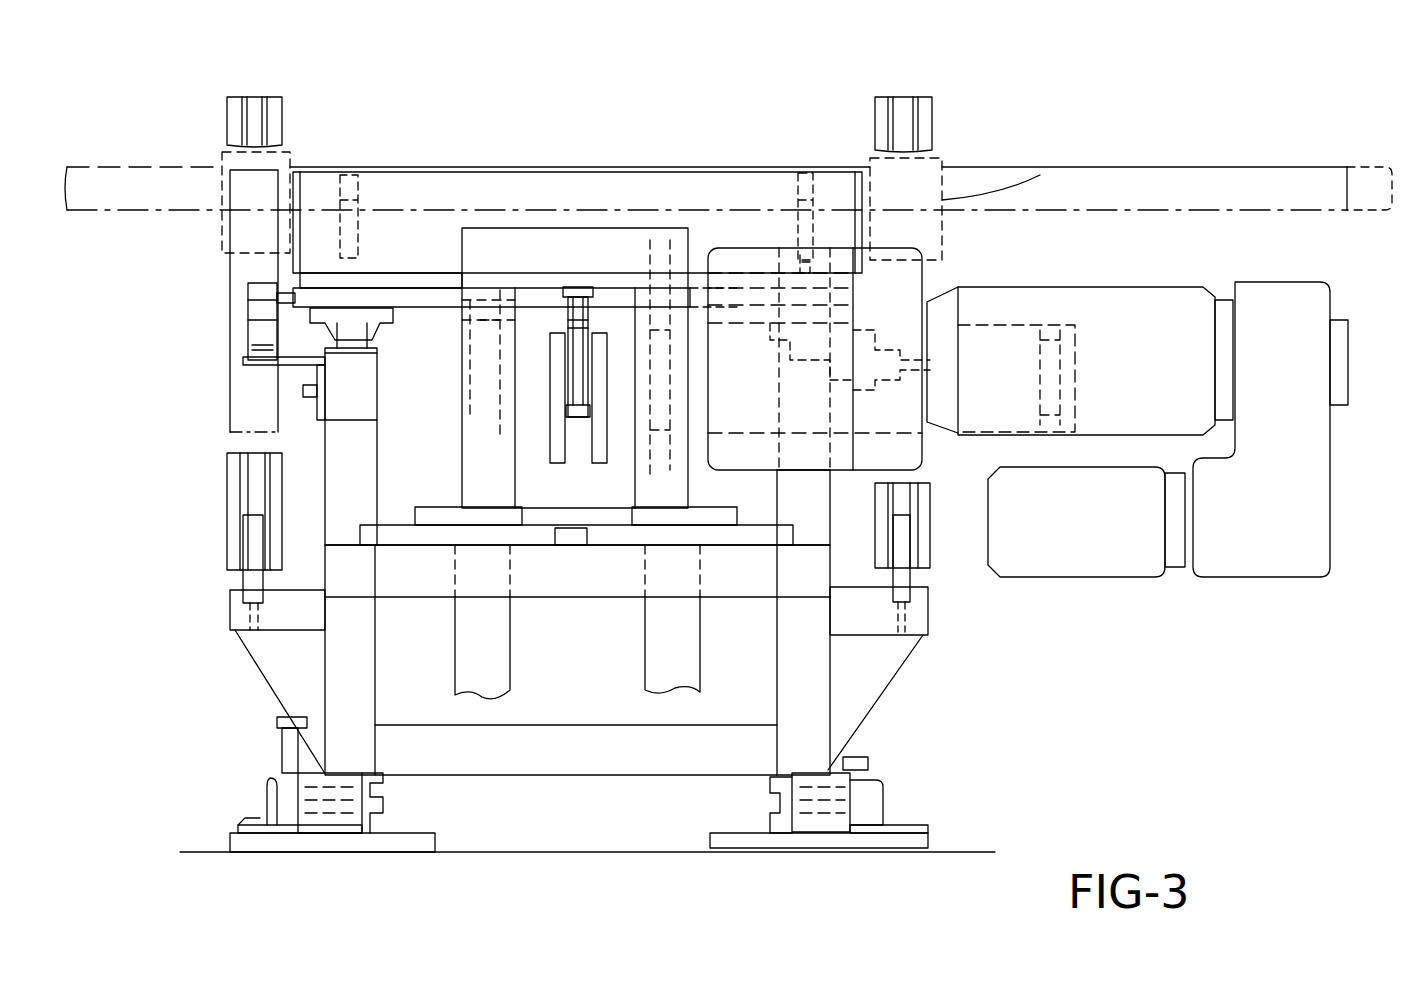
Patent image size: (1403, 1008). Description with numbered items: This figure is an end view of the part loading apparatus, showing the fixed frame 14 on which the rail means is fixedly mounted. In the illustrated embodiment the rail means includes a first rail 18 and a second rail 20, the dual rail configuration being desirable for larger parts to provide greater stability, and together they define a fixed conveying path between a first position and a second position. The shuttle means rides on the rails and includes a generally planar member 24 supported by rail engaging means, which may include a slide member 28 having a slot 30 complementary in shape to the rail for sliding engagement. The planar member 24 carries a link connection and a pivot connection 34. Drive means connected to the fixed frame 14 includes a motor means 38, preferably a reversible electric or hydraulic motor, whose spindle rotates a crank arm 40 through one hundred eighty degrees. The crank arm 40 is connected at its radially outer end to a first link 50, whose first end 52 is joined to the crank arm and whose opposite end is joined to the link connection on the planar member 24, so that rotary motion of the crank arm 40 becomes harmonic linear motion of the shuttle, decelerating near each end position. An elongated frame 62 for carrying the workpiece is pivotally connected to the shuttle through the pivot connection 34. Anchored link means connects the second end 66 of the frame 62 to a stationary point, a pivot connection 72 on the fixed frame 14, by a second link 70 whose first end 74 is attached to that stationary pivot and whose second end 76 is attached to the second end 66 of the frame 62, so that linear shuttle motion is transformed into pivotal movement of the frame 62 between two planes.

The fixed frame 14 is at (376, 700).
The first rail 18 is at (245, 350).
The second rail 20 is at (840, 372).
The planar member 24 is at (400, 270).
The slide member 28 is at (390, 335).
The slot 30 is at (355, 340).
The pivot connection 34 is at (350, 190).
The motor means 38 is at (1160, 285).
The crank arm 40 is at (578, 420).
The first link 50 is at (550, 448).
The first end 52 is at (553, 352).
The elongated frame 62 is at (222, 237).
The second end 66 is at (240, 95).
The second link 70 is at (227, 112).
The pivot connection 72 is at (245, 512).
The first end 74 is at (227, 550).
The second end 76 is at (227, 135).